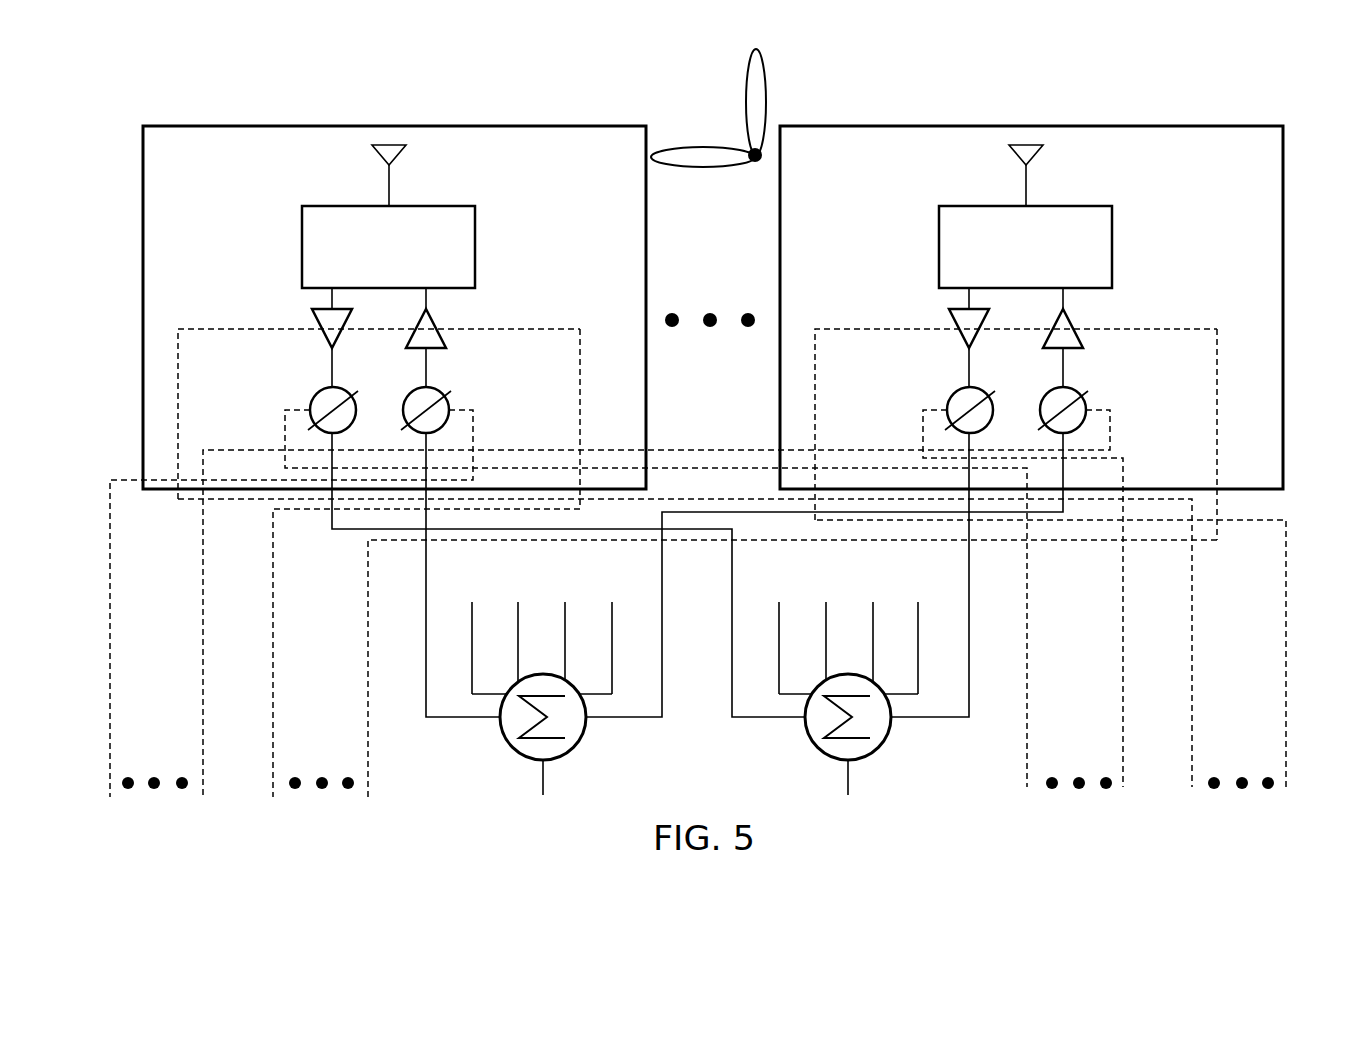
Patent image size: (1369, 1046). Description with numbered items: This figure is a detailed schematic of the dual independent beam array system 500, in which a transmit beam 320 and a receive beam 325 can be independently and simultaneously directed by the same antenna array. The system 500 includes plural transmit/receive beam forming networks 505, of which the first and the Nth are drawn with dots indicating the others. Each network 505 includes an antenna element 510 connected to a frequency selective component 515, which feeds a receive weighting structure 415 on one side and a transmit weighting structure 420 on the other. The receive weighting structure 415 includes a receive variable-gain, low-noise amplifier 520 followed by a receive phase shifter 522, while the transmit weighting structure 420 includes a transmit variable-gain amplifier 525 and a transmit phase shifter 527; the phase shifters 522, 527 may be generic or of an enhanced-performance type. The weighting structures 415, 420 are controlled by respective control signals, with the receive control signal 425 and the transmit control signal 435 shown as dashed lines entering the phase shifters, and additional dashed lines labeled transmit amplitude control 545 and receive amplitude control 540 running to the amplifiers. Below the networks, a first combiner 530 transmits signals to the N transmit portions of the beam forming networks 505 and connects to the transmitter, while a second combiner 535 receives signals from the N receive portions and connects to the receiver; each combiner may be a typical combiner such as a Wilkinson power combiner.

The dual independent beam array system 500 is at (1237, 68).
The transmit/receive beam forming network 505 is at (538, 124).
The antenna element 510 is at (392, 191).
The frequency selective component 515 is at (477, 211).
The receive variable-gain, low-noise amplifier 520 is at (348, 313).
The transmit variable-gain amplifier 525 is at (428, 312).
The receive phase shifter 522 is at (325, 387).
The transmit phase shifter 527 is at (412, 387).
The receive weighting structure 415 is at (261, 342).
The transmit weighting structure 420 is at (472, 342).
The transmit beam 320 is at (680, 147).
The receive beam 325 is at (768, 78).
The first combiner 530 is at (584, 740).
The second combiner 535 is at (889, 740).
The transmit control signal 435 is at (205, 828).
The transmit amplitude control 545 is at (392, 828).
The receive control signal 425 is at (977, 828).
The receive amplitude control 540 is at (1205, 828).